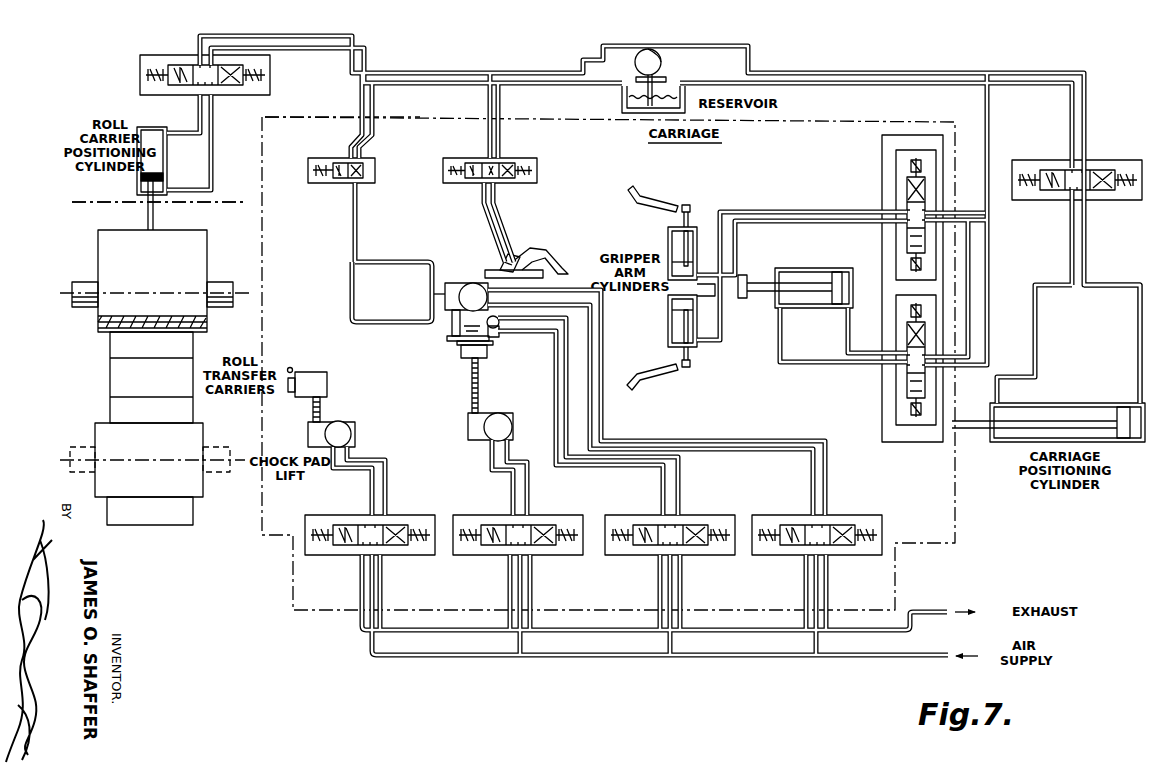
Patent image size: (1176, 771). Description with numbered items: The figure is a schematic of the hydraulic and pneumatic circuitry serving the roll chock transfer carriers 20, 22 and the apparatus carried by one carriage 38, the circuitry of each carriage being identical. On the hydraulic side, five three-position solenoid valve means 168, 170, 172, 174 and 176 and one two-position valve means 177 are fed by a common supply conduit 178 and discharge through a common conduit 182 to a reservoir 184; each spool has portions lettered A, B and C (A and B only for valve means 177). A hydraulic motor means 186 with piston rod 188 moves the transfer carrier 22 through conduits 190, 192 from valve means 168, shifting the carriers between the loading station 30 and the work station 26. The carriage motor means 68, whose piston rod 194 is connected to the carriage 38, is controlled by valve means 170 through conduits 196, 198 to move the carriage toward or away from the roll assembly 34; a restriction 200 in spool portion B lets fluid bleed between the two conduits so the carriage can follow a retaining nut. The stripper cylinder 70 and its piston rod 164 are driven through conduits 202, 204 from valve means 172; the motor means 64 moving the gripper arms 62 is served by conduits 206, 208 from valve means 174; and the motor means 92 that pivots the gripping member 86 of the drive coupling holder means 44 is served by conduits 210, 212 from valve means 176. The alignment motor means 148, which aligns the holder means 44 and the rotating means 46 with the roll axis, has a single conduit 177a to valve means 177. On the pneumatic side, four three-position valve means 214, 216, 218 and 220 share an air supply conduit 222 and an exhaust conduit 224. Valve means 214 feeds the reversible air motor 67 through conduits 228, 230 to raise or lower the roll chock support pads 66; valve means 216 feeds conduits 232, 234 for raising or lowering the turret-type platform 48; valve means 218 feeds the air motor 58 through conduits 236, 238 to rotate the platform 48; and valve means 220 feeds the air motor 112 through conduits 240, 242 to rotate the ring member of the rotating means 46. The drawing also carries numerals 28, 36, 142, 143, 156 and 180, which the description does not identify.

The roll chock transfer carrier 20 is at (158, 527).
The roll chock transfer carrier 22 is at (200, 231).
The work station 26 is at (236, 292).
The chock pad 28 is at (218, 472).
The loading station 30 is at (221, 201).
The roll assembly 34 is at (209, 263).
The roll chock 36 is at (206, 499).
The carriage 38 is at (341, 115).
The drive coupling holder means 44 is at (539, 253).
The rotating means 46 is at (426, 270).
The turret-type platform 48 is at (457, 344).
The air motor 58 is at (500, 333).
The gripper arm 62 is at (651, 181).
The motor means 64 is at (666, 250).
The roll chock support pad 66 is at (324, 372).
The motor means 67 is at (307, 431).
The motor means 68 is at (1073, 401).
The stripper cylinder 70 is at (832, 311).
The gripping member 86 is at (558, 269).
The motor means 92 is at (523, 258).
The air motor 112 is at (473, 283).
The rotating means lift cylinder 142 is at (468, 411).
The lift cylinder rod 143 is at (501, 413).
The motor means 148 is at (448, 333).
The gripper arm piston rod 156 is at (683, 203).
The piston rod 164 is at (745, 275).
The valve means 168 is at (236, 103).
The valve means 170 is at (1046, 158).
The valve means 172 is at (907, 340).
The valve means 174 is at (893, 160).
The valve means 176 is at (540, 166).
The valve means 177 is at (368, 162).
The conduit 177a is at (359, 237).
The supply conduit 178 is at (443, 71).
The pump 180 is at (662, 63).
The discharge conduit 182 is at (433, 85).
The reservoir 184 is at (620, 100).
The motor means 186 is at (139, 172).
The piston rod 188 is at (147, 216).
The conduit 190 is at (177, 142).
The conduit 192 is at (208, 170).
The piston rod 194 is at (971, 429).
The conduit 196 is at (1030, 368).
The conduit 198 is at (1137, 368).
The restriction 200 is at (1086, 206).
The conduit 202 is at (848, 340).
The conduit 204 is at (818, 366).
The conduit 206 is at (816, 208).
The conduit 208 is at (828, 223).
The conduit 210 is at (503, 226).
The conduit 212 is at (486, 241).
The valve means 214 is at (395, 514).
The valve means 216 is at (560, 514).
The valve means 218 is at (710, 505).
The valve means 220 is at (822, 514).
The supply conduit 222 is at (904, 660).
The exhaust conduit 224 is at (456, 628).
The conduit 228 is at (374, 462).
The conduit 230 is at (387, 463).
The conduit 232 is at (511, 484).
The conduit 234 is at (529, 478).
The conduit 236 is at (661, 484).
The conduit 238 is at (680, 479).
The conduit 240 is at (811, 472).
The conduit 242 is at (828, 472).